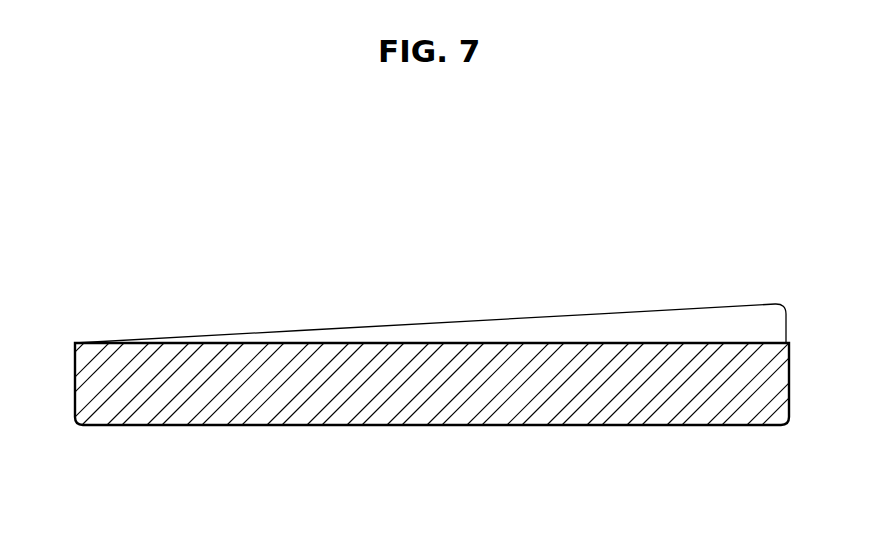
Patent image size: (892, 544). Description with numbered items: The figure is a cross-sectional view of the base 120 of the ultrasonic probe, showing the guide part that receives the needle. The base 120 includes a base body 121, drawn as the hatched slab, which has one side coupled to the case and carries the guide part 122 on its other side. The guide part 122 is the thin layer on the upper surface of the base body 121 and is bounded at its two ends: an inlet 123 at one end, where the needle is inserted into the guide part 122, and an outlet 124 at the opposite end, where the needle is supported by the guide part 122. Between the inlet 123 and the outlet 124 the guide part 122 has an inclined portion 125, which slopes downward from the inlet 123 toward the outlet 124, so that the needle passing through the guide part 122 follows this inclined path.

The base 120 is at (132, 449).
The base body 121 is at (555, 398).
The guide part 122 is at (736, 198).
The inlet 123 is at (788, 343).
The outlet 124 is at (75, 343).
The inclined portion 125 is at (432, 343).